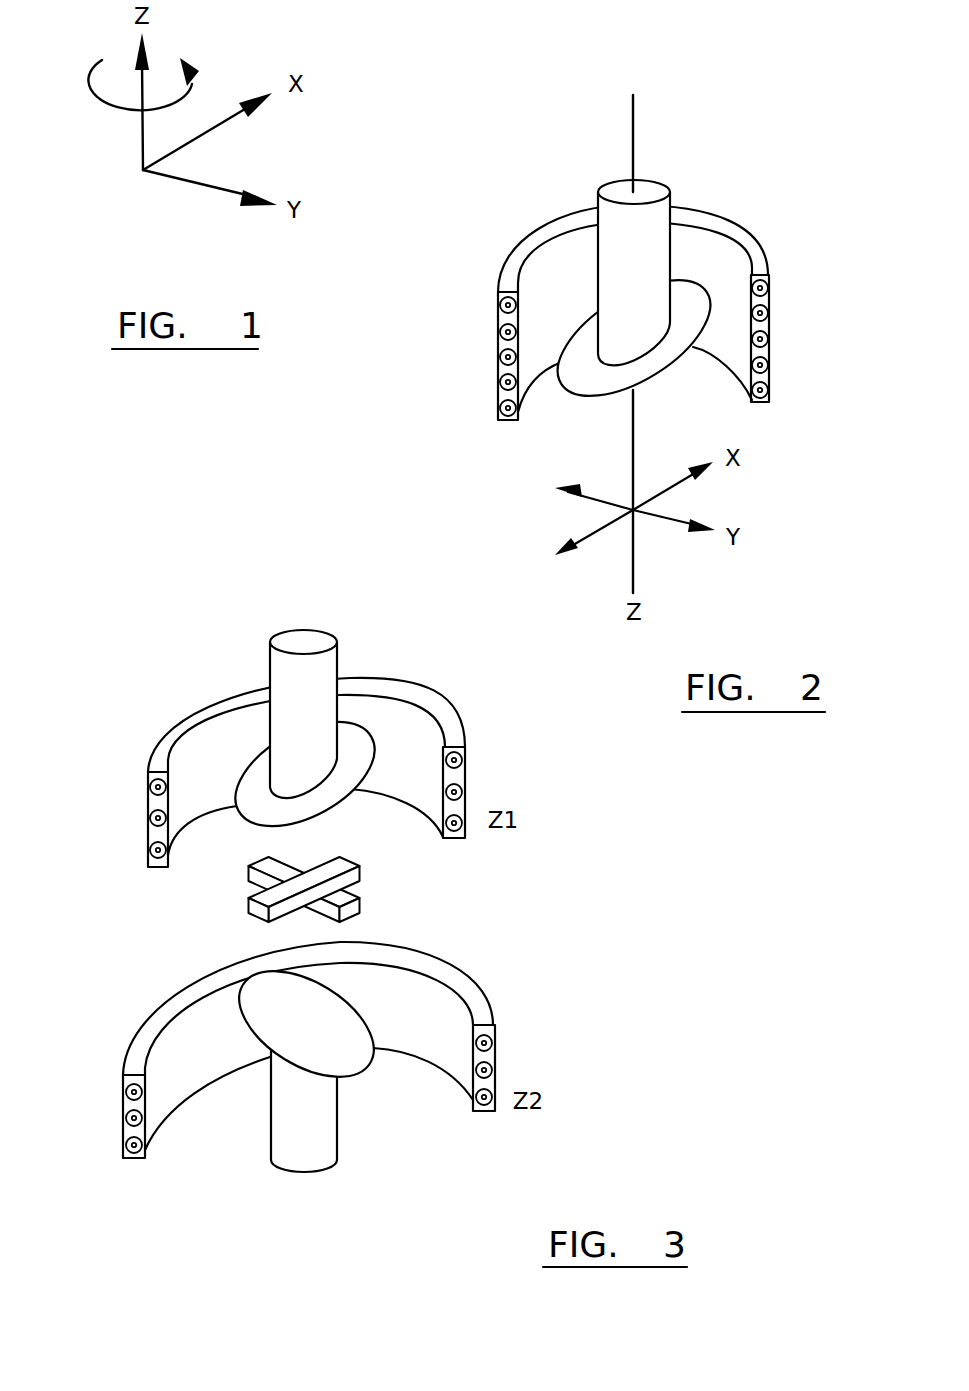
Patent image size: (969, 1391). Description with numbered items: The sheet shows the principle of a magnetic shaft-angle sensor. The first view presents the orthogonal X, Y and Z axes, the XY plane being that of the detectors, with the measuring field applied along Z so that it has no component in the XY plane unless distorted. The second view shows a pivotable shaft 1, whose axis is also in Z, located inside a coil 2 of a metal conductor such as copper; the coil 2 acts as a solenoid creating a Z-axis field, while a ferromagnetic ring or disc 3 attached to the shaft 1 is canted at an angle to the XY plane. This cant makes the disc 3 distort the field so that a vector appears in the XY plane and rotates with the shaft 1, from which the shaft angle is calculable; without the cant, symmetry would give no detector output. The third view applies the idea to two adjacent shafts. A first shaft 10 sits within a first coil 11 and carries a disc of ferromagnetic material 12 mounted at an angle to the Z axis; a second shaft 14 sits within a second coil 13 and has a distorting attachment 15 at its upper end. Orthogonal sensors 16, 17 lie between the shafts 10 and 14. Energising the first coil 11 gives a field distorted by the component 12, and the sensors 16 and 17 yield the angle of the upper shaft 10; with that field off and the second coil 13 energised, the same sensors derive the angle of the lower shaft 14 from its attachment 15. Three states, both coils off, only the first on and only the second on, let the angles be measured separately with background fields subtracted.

In FIG. 2, the pivotable shaft 1 is at (647, 248).
In FIG. 2, the coil 2 is at (738, 235).
In FIG. 2, the ferromagnetic ring or disc 3 is at (663, 362).
In FIG. 3, the first shaft 10 is at (293, 677).
In FIG. 3, the coil 11 is at (197, 722).
In FIG. 3, the disc of ferromagnetic material 12 is at (262, 806).
In FIG. 3, the coil 13 is at (495, 1052).
In FIG. 3, the second shaft 14 is at (320, 1128).
In FIG. 3, the distorting attachment 15 is at (283, 1013).
In FIG. 3, the orthogonal sensor 16 is at (340, 865).
In FIG. 3, the orthogonal sensor 17 is at (340, 897).